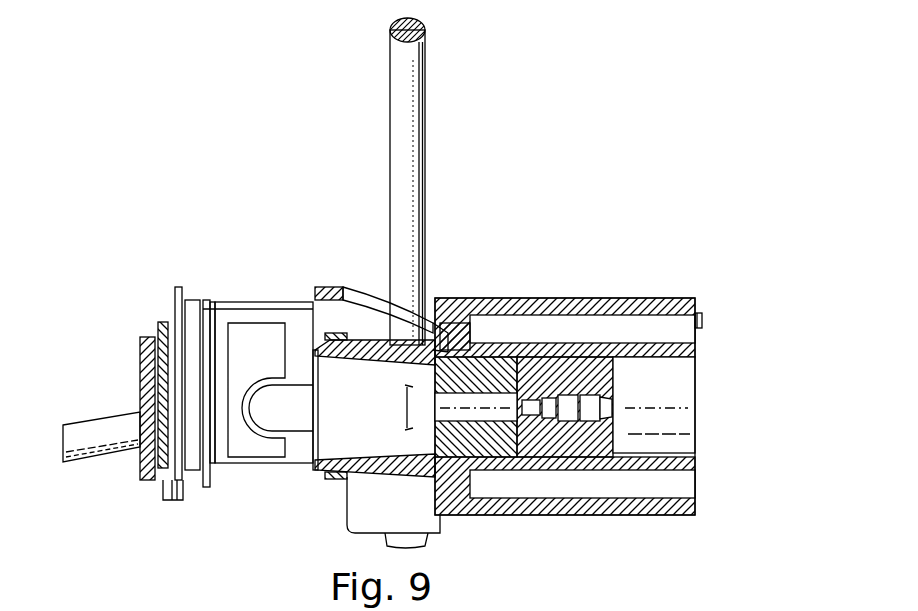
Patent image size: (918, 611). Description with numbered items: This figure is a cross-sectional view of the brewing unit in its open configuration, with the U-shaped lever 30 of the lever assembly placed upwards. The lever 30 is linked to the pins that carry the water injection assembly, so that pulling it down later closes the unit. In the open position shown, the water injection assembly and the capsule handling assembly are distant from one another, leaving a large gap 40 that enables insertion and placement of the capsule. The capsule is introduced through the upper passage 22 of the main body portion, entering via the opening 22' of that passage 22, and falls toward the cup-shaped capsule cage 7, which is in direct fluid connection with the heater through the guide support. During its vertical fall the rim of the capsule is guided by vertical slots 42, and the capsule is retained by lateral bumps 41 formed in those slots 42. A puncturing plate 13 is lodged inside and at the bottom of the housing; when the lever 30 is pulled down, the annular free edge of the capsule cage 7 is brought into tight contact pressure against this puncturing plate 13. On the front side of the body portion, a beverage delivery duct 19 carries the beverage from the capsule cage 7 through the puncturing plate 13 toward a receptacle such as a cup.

The lever 30 is at (409, 160).
The capsule cage 7 is at (397, 347).
The passage 22 is at (496, 379).
The opening 22' is at (180, 362).
The gap 40 is at (275, 402).
The vertical slots 42 is at (162, 320).
The lateral bumps 41 is at (140, 398).
The puncturing plate 13 is at (170, 483).
The beverage delivery duct 19 is at (55, 440).